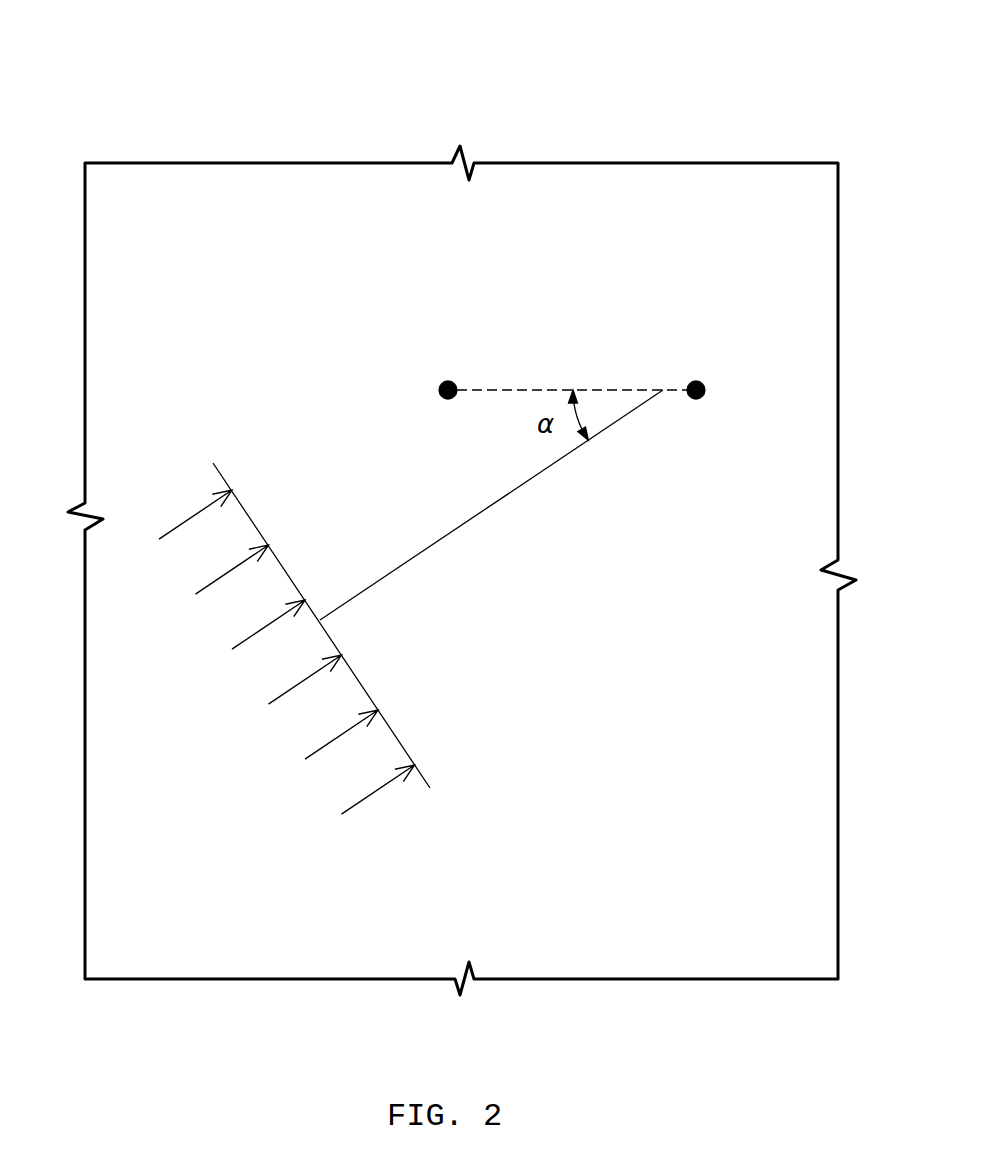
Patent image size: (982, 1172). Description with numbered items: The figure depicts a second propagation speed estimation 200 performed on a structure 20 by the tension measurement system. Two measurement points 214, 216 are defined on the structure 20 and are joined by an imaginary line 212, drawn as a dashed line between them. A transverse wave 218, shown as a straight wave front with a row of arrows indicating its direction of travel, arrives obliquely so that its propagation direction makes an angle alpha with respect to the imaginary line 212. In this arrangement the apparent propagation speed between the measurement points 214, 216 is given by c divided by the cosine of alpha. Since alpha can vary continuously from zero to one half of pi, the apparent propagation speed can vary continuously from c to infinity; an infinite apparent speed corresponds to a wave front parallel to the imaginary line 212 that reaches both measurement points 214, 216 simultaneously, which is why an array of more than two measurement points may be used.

The structure 20 is at (152, 162).
The second propagation speed estimation 200 is at (750, 73).
The imaginary line 212 is at (565, 382).
The measurement point 214 is at (455, 367).
The measurement point 216 is at (700, 365).
The transverse wave 218 is at (245, 505).